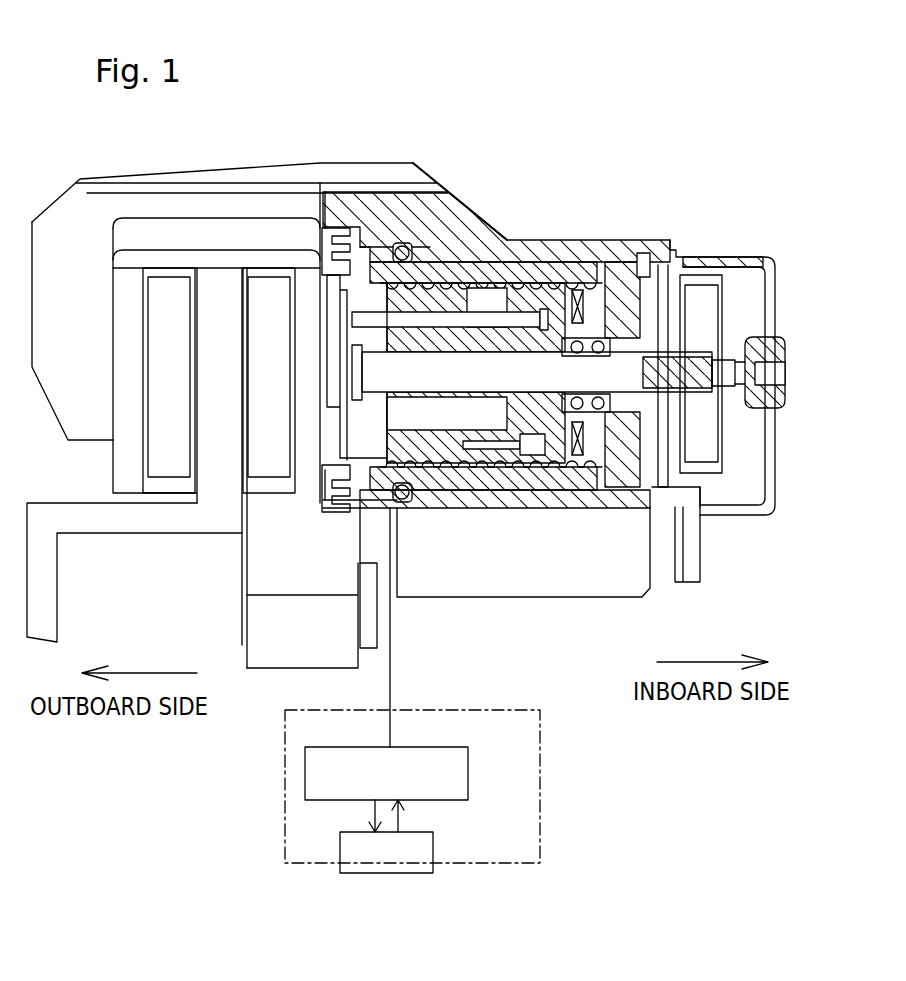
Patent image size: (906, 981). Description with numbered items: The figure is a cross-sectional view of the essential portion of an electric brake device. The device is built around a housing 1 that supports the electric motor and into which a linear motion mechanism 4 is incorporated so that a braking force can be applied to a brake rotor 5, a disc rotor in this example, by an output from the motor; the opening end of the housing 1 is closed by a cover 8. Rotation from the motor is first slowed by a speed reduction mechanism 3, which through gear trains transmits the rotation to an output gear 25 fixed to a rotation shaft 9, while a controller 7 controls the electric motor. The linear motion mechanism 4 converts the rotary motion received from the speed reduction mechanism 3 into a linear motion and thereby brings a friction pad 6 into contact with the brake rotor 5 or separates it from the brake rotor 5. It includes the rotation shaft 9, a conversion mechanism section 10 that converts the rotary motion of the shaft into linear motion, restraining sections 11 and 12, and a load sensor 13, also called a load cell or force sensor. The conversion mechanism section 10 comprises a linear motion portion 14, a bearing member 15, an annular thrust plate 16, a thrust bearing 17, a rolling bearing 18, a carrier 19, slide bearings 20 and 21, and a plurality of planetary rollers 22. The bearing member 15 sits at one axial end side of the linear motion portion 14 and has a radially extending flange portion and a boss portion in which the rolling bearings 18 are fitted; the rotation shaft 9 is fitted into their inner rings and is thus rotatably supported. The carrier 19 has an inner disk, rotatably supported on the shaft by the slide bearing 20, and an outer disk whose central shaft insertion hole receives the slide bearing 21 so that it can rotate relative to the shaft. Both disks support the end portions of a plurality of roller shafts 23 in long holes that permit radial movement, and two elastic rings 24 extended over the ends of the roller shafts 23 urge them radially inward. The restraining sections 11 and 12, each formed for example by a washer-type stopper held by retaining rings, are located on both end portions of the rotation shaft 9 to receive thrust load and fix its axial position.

The housing 1 is at (398, 200).
The speed reduction mechanism 3 is at (707, 273).
The linear motion mechanism 4 is at (487, 239).
The brake rotor 5 is at (213, 498).
The friction pad 6 is at (165, 466).
The controller 7 is at (530, 752).
The cover 8 is at (775, 265).
The rotation shaft 9 is at (548, 355).
The conversion mechanism section 10 is at (505, 258).
The restraining section 11 is at (345, 330).
The restraining section 12 is at (730, 345).
The load sensor 13 is at (640, 265).
The linear motion portion 14 is at (455, 470).
The bearing member 15 is at (598, 300).
The annular thrust plate 16 is at (568, 272).
The thrust bearing 17 is at (578, 465).
The rolling bearing 18 is at (630, 478).
The carrier 19 is at (405, 445).
The slide bearing 20 is at (512, 470).
The slide bearing 21 is at (365, 262).
The planetary roller 22 is at (470, 240).
The roller shaft 23 is at (408, 330).
The elastic ring 24 is at (345, 440).
The output gear 25 is at (705, 444).